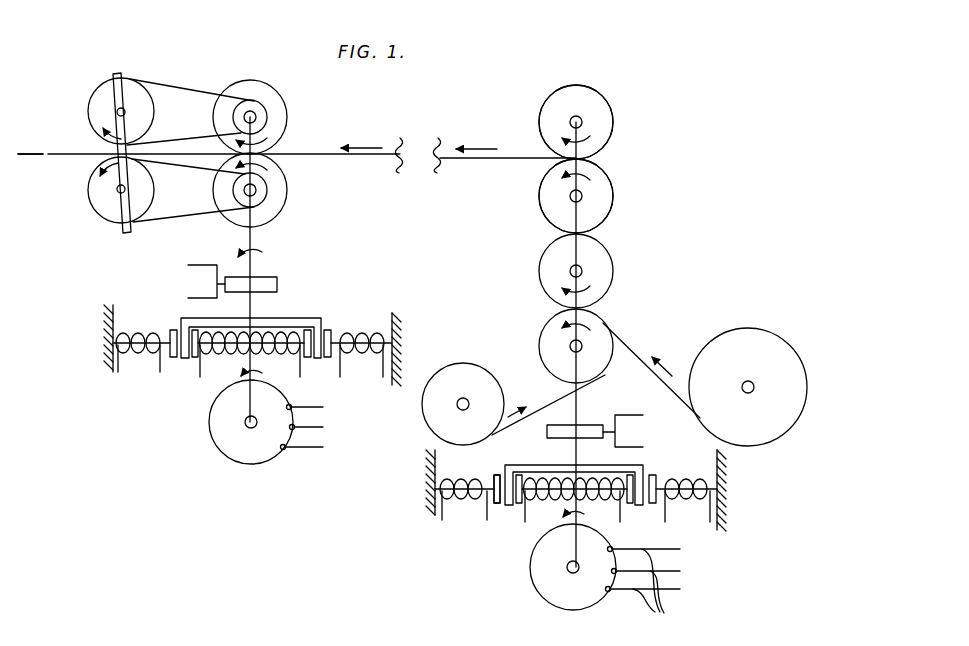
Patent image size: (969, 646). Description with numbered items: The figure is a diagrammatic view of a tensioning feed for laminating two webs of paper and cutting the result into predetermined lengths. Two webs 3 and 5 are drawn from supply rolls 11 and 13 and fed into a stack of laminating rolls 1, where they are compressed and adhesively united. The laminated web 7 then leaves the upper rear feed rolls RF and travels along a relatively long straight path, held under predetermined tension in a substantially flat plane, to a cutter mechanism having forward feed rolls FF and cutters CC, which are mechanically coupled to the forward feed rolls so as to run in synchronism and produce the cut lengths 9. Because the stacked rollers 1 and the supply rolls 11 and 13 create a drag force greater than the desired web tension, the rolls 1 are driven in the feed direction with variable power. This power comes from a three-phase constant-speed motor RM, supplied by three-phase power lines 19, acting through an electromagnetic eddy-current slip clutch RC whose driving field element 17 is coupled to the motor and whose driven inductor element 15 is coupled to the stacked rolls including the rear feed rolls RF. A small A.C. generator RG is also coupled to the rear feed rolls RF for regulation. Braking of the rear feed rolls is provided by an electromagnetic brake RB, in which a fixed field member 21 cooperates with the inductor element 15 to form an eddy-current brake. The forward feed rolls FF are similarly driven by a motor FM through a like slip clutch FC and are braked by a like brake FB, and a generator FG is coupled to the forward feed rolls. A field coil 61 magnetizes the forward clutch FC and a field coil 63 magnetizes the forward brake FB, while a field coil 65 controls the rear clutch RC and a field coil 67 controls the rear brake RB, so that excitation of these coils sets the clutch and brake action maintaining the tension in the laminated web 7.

The laminating rolls 1 is at (612, 136).
The web 3 is at (547, 401).
The web 5 is at (630, 347).
The laminated web 7 is at (316, 153).
The cut lengths 9 is at (47, 153).
The supply roll 11 is at (462, 371).
The supply roll 13 is at (750, 338).
The driven inductor element 15 is at (533, 464).
The driving field element 17 is at (523, 498).
The three-phase power lines 19 is at (645, 588).
The fixed field member 21 is at (497, 505).
The field coil 61 is at (263, 355).
The field coil 63 is at (137, 352).
The field coil 65 is at (602, 498).
The field coil 67 is at (461, 499).
The cutters CC is at (103, 98).
The forward feed rolls FF is at (278, 97).
The generator FG is at (270, 279).
The forward brake FB is at (148, 368).
The forward slip clutch FC is at (190, 368).
The forward motor FM is at (255, 458).
The rear feed rolls RF is at (600, 106).
The A.C. generator RG is at (583, 428).
The rear brake RB is at (479, 499).
The rear slip clutch RC is at (517, 511).
The rear motor RM is at (572, 597).